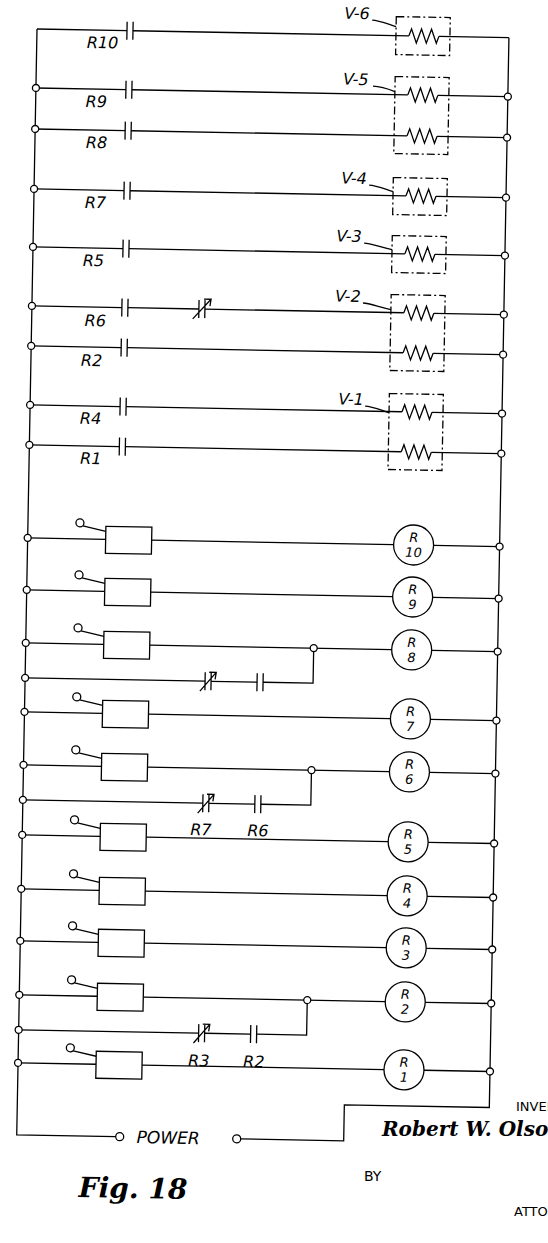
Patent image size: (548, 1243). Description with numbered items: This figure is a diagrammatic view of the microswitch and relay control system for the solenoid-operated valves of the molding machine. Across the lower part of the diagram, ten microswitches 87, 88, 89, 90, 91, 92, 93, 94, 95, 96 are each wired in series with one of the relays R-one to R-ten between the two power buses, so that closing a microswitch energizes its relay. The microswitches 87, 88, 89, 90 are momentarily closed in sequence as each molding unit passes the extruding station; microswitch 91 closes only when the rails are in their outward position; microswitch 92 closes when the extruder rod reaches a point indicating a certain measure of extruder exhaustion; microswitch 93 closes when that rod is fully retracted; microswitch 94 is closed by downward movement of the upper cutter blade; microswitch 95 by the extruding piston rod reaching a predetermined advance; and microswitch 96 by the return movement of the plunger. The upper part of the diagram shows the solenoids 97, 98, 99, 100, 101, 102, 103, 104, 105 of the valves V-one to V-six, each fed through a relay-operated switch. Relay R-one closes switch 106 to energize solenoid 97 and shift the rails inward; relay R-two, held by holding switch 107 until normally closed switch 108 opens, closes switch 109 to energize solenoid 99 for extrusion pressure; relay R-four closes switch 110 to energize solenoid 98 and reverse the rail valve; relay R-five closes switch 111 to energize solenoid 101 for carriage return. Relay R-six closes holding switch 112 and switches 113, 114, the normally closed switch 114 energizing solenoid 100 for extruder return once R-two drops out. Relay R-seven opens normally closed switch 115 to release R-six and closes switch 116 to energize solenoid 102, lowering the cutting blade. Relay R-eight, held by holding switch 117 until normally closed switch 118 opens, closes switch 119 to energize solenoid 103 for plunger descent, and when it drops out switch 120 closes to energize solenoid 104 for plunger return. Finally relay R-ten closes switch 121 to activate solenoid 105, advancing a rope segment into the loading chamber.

The microswitch 87 is at (104, 1061).
The microswitch 88 is at (105, 993).
The microswitch 89 is at (106, 939).
The microswitch 90 is at (107, 887).
The microswitch 91 is at (108, 833).
The microswitch 92 is at (109, 763).
The microswitch 93 is at (110, 710).
The microswitch 94 is at (111, 641).
The microswitch 95 is at (112, 588).
The microswitch 96 is at (113, 536).
The solenoid 97 is at (440, 447).
The solenoid 98 is at (440, 407).
The solenoid 99 is at (440, 348).
The solenoid 100 is at (440, 308).
The solenoid 101 is at (440, 249).
The solenoid 102 is at (440, 191).
The solenoid 103 is at (440, 131).
The solenoid 104 is at (440, 90).
The solenoid 105 is at (440, 31).
The switch 106 is at (135, 443).
The holding switch 107 is at (277, 1028).
The normally closed switch 108 is at (215, 1027).
The switch 109 is at (135, 344).
The switch 110 is at (135, 403).
The switch 111 is at (135, 244).
The holding switch 112 is at (277, 798).
The switch 113 is at (135, 303).
The normally closed switch 114 is at (210, 297).
The normally closed switch 115 is at (215, 797).
The switch 116 is at (135, 186).
The holding switch 117 is at (277, 676).
The normally closed switch 118 is at (215, 675).
The switch 119 is at (135, 126).
The switch 120 is at (135, 85).
The switch 121 is at (135, 26).